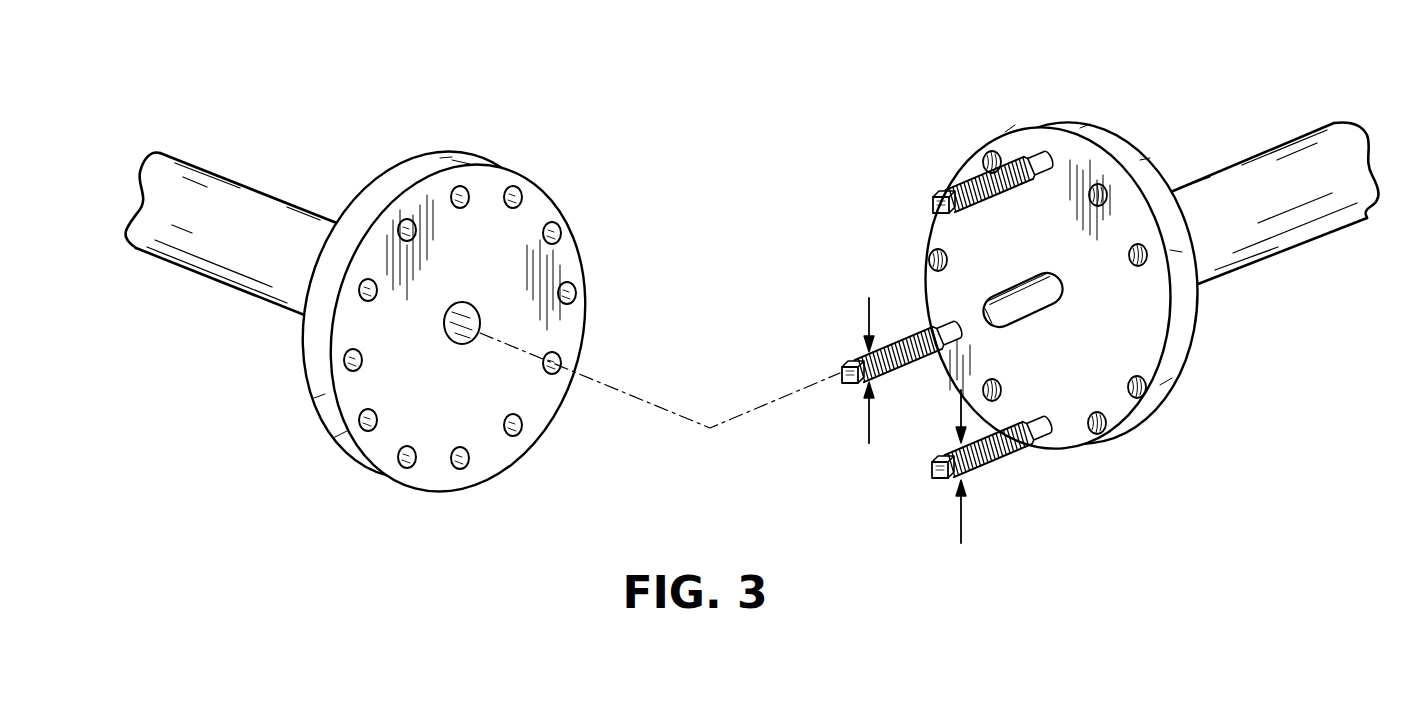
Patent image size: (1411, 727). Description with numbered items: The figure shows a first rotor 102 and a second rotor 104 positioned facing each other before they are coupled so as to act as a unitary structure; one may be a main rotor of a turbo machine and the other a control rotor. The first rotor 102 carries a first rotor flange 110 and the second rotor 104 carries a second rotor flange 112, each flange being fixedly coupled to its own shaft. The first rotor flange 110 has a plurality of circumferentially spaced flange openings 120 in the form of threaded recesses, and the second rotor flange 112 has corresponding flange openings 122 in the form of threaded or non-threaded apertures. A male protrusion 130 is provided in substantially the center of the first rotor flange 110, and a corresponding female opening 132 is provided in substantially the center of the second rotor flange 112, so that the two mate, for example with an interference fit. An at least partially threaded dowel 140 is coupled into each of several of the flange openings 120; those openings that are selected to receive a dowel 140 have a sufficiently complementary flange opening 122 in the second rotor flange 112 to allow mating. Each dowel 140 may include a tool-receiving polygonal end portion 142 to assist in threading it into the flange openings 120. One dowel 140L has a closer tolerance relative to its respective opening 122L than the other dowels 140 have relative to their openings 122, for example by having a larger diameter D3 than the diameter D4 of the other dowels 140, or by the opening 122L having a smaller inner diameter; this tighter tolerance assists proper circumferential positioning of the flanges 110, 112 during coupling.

The first rotor 102 is at (1063, 293).
The second rotor 104 is at (406, 304).
The first rotor flange 110 is at (1173, 368).
The second rotor flange 112 is at (351, 455).
The flange openings 120 is at (1062, 126).
The flange openings 122 is at (560, 360).
The opening 122L is at (462, 463).
The male protrusion 130 is at (997, 317).
The female opening 132 is at (482, 322).
The at least partially threaded dowel 140 is at (1021, 337).
The dowel 140L is at (998, 458).
The tool-receiving polygonal end portion 142 is at (932, 202).
The diameter D3 is at (962, 478).
The diameter D4 is at (870, 354).